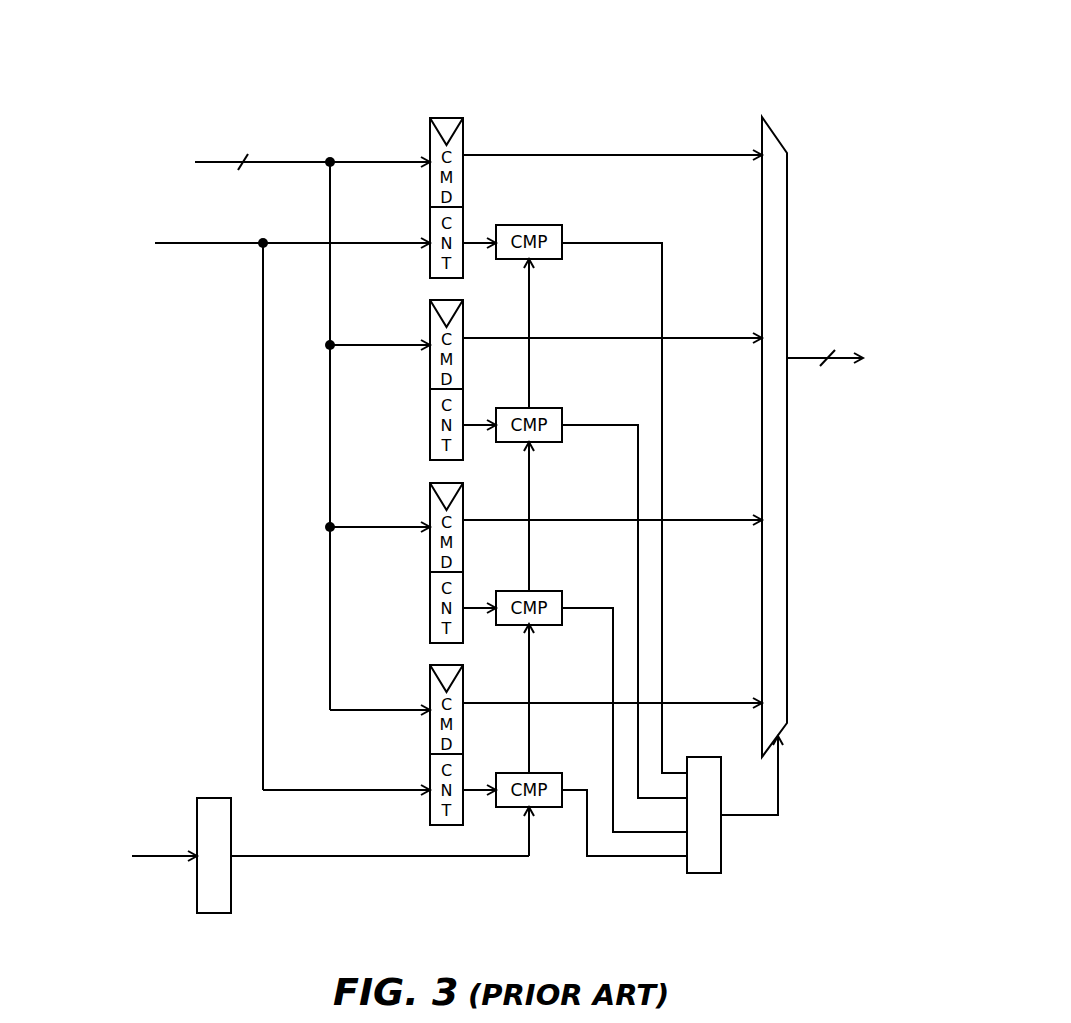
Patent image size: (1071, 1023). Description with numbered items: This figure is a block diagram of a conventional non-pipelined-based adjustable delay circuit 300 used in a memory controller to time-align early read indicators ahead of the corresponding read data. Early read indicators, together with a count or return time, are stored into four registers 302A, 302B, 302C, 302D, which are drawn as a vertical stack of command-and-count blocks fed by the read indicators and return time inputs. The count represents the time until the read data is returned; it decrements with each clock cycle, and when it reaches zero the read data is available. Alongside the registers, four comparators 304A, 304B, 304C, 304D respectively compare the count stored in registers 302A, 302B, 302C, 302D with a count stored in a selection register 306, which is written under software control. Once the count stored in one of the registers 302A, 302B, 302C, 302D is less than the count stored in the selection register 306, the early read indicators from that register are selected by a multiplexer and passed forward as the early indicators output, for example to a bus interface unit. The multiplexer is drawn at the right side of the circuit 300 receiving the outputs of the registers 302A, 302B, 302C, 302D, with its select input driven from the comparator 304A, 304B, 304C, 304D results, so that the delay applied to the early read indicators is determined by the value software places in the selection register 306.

The non-pipelined-based adjustable delay circuit 300 is at (668, 95).
The register 302A is at (430, 140).
The register 302B is at (430, 322).
The register 302C is at (430, 505).
The register 302D is at (430, 687).
The comparator 304A is at (540, 225).
The comparator 304B is at (540, 408).
The comparator 304C is at (540, 591).
The comparator 304D is at (530, 773).
The selection register 306 is at (213, 797).